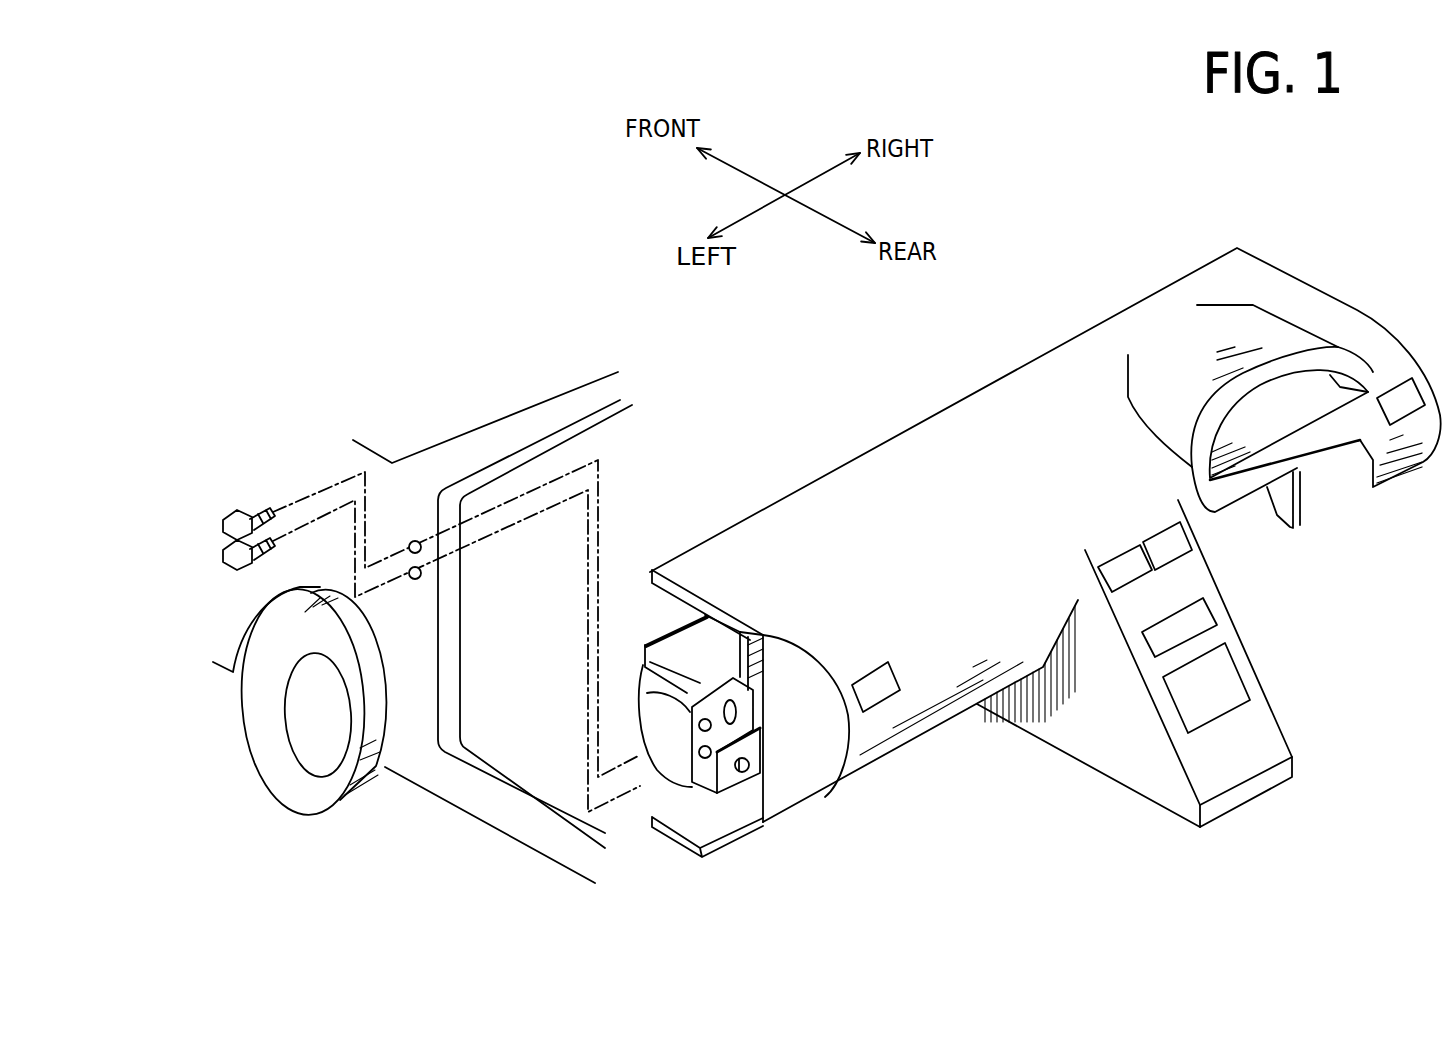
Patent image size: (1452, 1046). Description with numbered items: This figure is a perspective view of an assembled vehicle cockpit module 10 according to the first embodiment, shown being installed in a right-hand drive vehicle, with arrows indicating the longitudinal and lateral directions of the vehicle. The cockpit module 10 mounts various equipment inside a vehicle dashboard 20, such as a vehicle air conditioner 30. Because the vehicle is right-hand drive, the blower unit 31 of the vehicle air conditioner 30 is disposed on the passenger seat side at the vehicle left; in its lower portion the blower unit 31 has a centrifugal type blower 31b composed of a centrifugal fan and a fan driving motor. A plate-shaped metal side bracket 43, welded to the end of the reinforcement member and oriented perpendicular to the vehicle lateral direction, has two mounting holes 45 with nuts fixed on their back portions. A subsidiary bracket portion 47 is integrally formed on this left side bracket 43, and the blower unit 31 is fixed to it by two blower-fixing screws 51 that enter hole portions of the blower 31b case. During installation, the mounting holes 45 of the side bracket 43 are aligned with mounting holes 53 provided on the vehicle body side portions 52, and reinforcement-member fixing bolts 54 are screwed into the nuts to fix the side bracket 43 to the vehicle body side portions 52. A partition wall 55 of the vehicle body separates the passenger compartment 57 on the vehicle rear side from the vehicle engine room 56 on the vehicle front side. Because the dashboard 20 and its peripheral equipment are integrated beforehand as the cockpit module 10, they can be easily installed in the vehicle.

The vehicle cockpit module 10 is at (1010, 372).
The vehicle dashboard 20 is at (1203, 500).
The vehicle air conditioner 30 is at (672, 622).
The blower unit 31 is at (643, 638).
The centrifugal type blower 31b is at (640, 737).
The side bracket 43 is at (708, 780).
The mounting holes 45 is at (655, 694).
The subsidiary bracket portion 47 is at (727, 778).
The blower-fixing screws 51 is at (752, 765).
The vehicle body side portions 52 is at (402, 615).
The mounting holes 53 is at (410, 542).
The reinforcement-member fixing bolts 54 is at (228, 517).
The partition wall (fire wall) 55 is at (597, 380).
The vehicle engine room 56 is at (547, 365).
The passenger compartment 57 is at (747, 440).